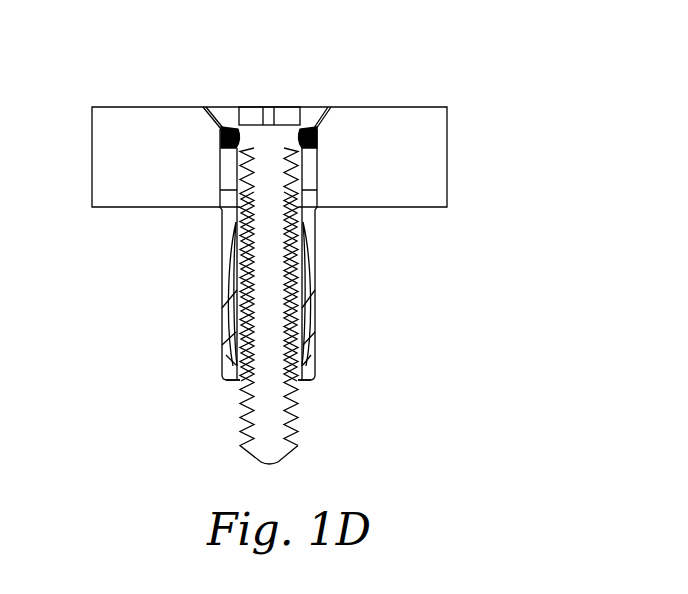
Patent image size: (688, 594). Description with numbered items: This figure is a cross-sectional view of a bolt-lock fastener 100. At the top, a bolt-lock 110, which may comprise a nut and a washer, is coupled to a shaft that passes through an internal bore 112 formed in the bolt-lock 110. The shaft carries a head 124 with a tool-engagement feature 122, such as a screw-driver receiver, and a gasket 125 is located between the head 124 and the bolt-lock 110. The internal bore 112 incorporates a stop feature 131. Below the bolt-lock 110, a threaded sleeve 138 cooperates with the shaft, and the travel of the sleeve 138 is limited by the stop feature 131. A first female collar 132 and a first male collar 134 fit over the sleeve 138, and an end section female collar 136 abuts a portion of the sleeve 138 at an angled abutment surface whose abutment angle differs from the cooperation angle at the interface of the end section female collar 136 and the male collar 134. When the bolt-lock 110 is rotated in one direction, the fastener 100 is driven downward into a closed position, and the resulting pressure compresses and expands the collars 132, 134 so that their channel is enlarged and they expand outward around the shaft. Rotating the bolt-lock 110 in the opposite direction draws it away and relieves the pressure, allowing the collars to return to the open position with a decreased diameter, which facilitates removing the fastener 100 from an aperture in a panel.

The bolt-lock fastener 100 is at (420, 35).
The bolt-lock 110 is at (432, 172).
The internal bore 112 is at (222, 213).
The tool-engagement feature 122 is at (275, 86).
The head 124 is at (333, 98).
The gasket 125 is at (319, 134).
The stop feature 131 is at (312, 172).
The first female collar 132 is at (228, 322).
The first male collar 134 is at (309, 230).
The end section female collar 136 is at (316, 352).
The threaded sleeve 138 is at (318, 378).